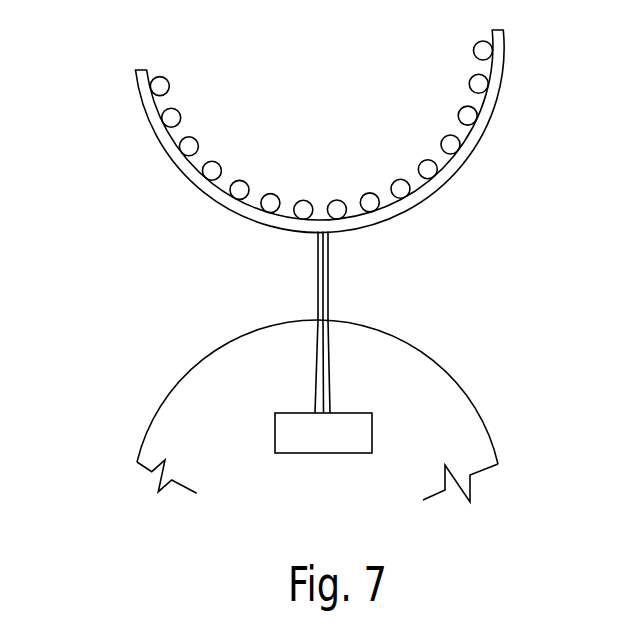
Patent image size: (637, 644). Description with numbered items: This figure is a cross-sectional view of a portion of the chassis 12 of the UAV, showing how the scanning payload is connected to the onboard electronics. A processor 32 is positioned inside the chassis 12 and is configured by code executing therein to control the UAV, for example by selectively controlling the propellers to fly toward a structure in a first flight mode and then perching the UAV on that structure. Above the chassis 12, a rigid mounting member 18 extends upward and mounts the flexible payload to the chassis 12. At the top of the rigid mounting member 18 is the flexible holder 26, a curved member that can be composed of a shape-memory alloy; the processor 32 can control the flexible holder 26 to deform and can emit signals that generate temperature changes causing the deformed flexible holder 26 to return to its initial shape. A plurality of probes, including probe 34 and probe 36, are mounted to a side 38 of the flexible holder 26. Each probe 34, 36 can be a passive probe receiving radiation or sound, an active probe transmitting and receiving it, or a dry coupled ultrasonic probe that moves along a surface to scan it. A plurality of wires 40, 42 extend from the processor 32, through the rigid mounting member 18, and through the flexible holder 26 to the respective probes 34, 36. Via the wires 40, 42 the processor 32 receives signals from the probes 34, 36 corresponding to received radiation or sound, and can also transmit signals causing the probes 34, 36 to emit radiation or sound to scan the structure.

The chassis 12 is at (490, 428).
The rigid mounting member 18 is at (331, 283).
The flexible holder 26 is at (150, 130).
The processor 32 is at (373, 432).
The probe 34 is at (243, 183).
The probe 36 is at (371, 194).
The side of the flexible holder 38 is at (155, 100).
The wire 40 is at (288, 232).
The wire 42 is at (365, 235).